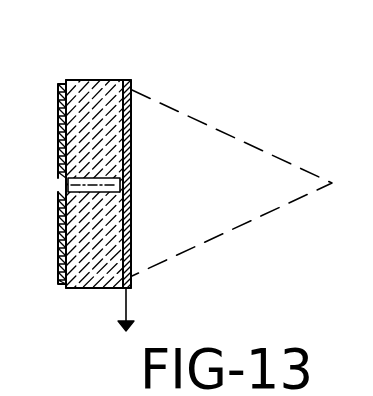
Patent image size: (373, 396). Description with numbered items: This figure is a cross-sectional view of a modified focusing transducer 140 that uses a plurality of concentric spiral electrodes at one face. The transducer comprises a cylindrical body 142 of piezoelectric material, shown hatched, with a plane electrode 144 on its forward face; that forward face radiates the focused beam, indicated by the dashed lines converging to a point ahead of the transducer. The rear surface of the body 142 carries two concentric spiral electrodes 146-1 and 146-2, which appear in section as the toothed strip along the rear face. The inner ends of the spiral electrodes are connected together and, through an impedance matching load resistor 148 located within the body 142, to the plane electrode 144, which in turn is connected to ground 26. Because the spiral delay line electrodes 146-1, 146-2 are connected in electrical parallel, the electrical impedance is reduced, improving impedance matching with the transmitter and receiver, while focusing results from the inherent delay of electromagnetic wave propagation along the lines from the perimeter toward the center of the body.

The focusing transducer 140 is at (109, 69).
The cylindrical body 142 is at (88, 288).
The plane electrode 144 is at (131, 158).
The spiral electrode 146-1 is at (60, 87).
The spiral electrode 146-2 is at (61, 286).
The impedance matching load resistor 148 is at (106, 193).
The ground 26 is at (134, 323).